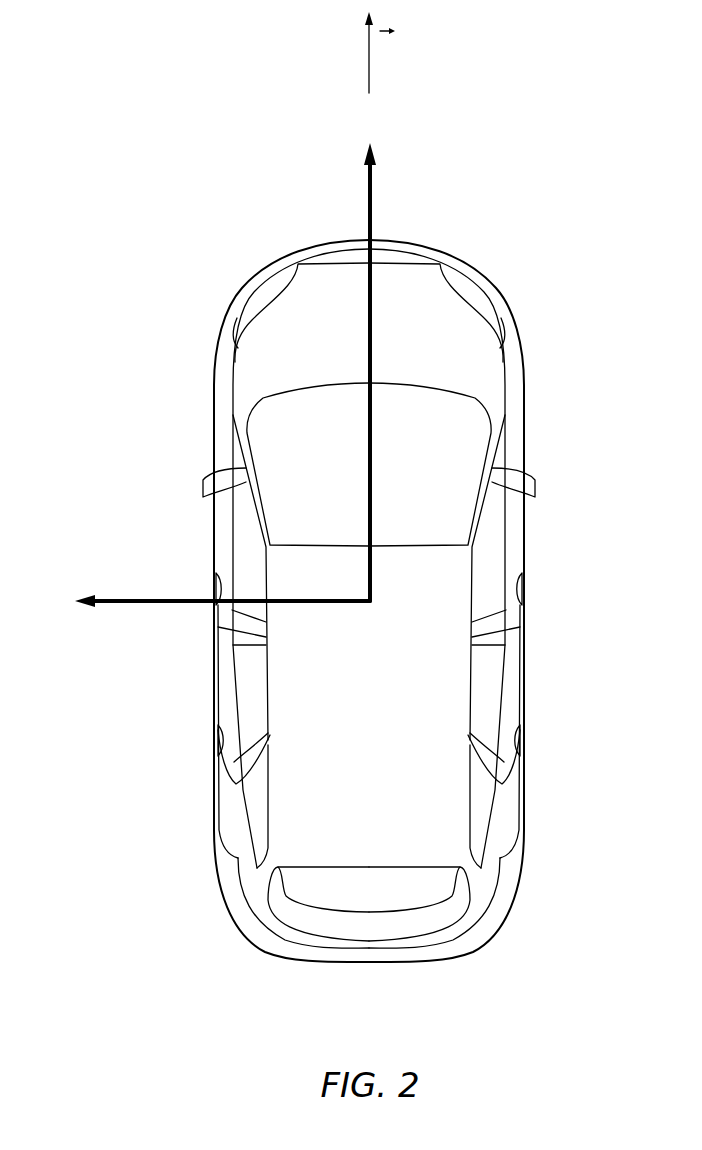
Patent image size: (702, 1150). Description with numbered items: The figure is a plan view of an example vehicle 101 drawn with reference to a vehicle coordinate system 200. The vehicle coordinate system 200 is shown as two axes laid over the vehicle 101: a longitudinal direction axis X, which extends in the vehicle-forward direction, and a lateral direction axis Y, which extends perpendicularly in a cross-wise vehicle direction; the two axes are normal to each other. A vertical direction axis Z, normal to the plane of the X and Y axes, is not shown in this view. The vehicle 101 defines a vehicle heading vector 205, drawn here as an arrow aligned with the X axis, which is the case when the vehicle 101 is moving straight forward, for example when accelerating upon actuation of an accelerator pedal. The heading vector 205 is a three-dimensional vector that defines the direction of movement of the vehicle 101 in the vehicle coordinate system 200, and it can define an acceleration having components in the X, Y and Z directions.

The vehicle 101 is at (492, 282).
The vehicle coordinate system 200 is at (421, 163).
The vehicle heading vector 205 is at (368, 65).